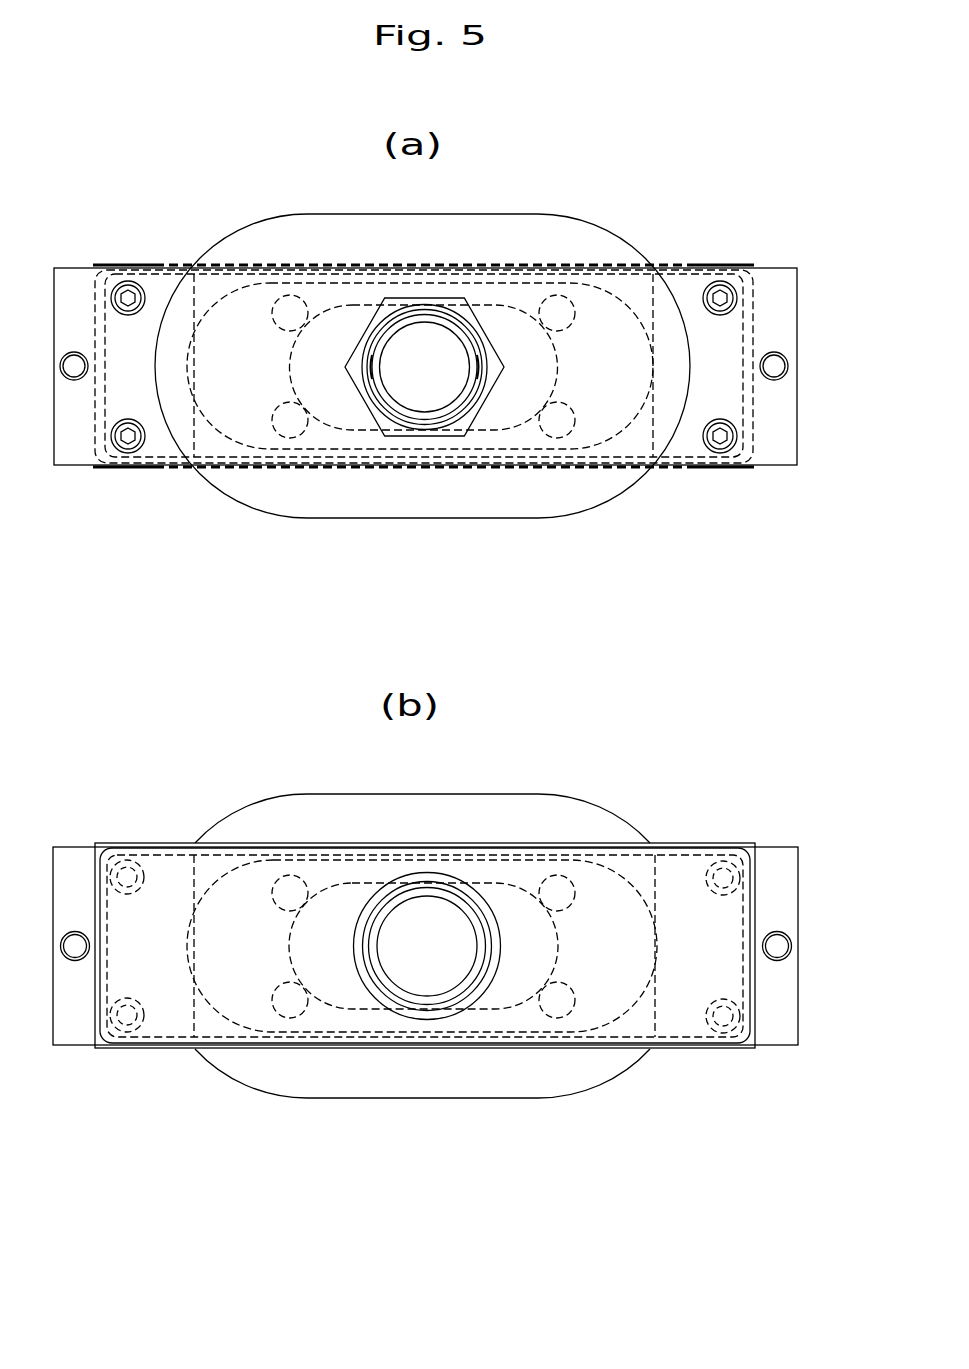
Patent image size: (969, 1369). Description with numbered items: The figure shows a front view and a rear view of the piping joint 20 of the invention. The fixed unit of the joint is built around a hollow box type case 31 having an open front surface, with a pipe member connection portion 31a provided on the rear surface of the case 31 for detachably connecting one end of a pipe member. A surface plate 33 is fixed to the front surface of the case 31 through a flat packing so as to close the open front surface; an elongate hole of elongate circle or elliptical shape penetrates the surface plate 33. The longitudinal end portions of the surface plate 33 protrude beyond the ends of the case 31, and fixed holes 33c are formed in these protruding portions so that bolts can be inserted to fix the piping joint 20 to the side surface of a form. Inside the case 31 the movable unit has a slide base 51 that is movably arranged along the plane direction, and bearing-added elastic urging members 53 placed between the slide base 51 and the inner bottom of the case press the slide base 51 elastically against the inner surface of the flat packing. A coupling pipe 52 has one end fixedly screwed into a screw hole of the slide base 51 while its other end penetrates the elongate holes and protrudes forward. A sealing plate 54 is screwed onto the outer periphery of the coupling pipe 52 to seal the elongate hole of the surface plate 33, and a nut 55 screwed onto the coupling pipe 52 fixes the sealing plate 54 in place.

The piping joint 20 is at (189, 507).
The case 31 is at (212, 861).
The pipe member connection portion 31a is at (447, 897).
The surface plate 33 is at (790, 286).
The fixed holes 33c is at (783, 946).
The slide base 51 is at (645, 1043).
The coupling pipe 52 is at (450, 408).
The bearing-added elastic urging members 53 is at (722, 453).
The sealing plate 54 is at (600, 231).
The nut 55 is at (473, 409).